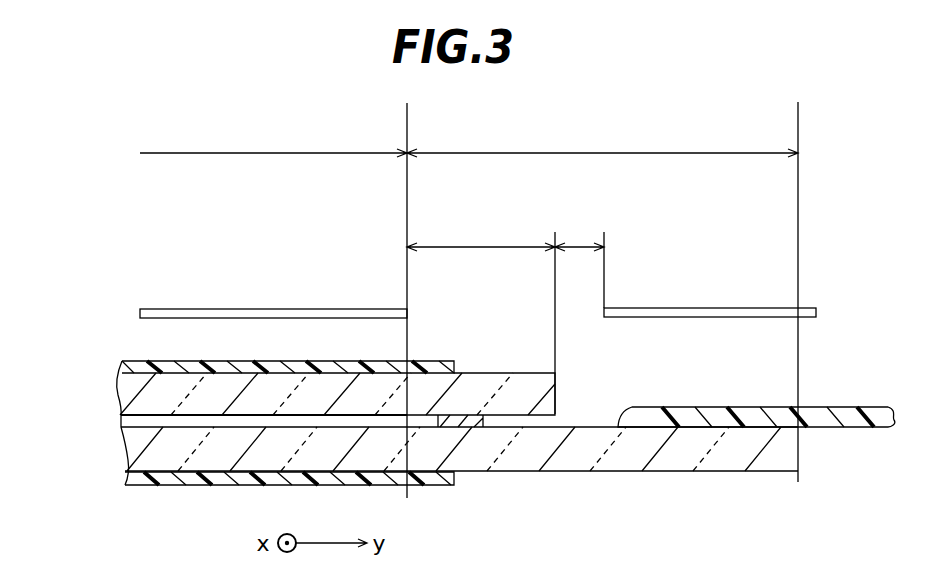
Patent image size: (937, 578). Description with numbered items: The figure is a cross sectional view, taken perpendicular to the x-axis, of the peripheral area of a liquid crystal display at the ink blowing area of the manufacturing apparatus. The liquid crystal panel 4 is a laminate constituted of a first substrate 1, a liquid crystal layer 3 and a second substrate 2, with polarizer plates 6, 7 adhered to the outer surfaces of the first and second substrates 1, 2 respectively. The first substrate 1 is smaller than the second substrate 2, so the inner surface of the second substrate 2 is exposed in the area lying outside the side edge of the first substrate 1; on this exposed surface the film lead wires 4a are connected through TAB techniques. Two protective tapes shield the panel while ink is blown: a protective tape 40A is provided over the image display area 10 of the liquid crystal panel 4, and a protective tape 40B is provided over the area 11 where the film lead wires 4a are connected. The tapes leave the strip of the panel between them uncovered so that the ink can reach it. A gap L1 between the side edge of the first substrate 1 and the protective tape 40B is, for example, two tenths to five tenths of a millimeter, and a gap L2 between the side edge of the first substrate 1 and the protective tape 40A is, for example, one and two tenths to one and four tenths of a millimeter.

The first substrate 1 is at (119, 395).
The second substrate 2 is at (125, 460).
The liquid crystal layer 3 is at (121, 424).
The liquid crystal panel 4 is at (62, 382).
The film lead wires 4a is at (843, 405).
The polarizer plate 6 is at (121, 366).
The polarizer plate 7 is at (122, 484).
The image display area 10 is at (273, 139).
The second region 11 is at (602, 139).
The protective tape 40A is at (217, 308).
The protective tape 40B is at (734, 307).
The gap L1 is at (579, 231).
The gap L2 is at (481, 231).